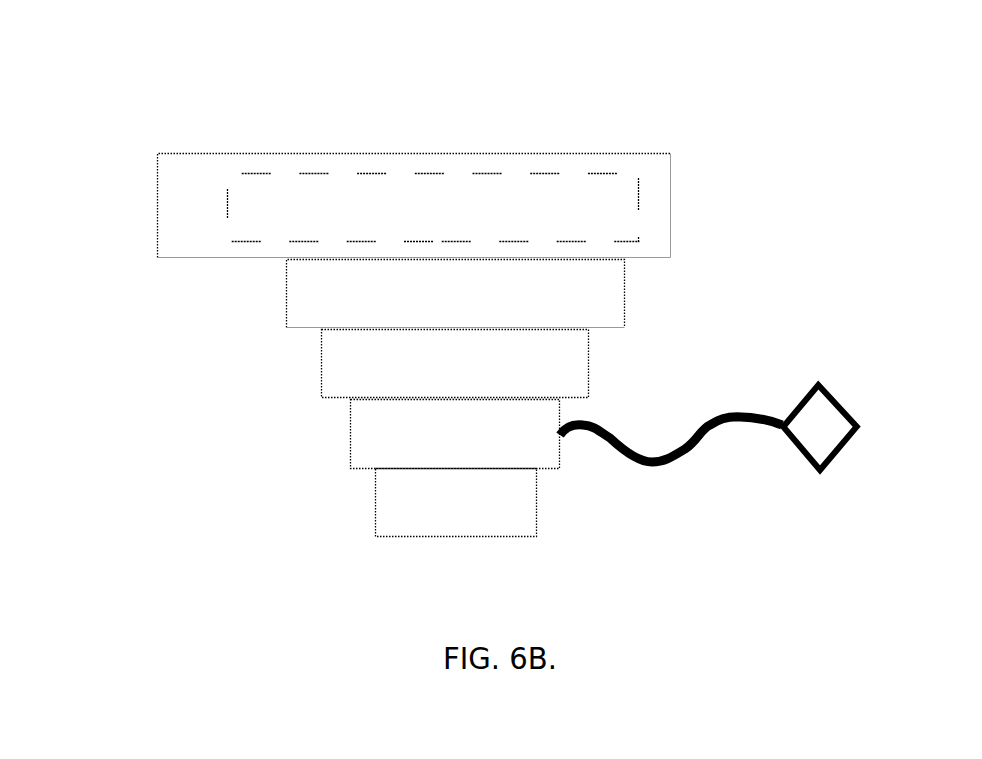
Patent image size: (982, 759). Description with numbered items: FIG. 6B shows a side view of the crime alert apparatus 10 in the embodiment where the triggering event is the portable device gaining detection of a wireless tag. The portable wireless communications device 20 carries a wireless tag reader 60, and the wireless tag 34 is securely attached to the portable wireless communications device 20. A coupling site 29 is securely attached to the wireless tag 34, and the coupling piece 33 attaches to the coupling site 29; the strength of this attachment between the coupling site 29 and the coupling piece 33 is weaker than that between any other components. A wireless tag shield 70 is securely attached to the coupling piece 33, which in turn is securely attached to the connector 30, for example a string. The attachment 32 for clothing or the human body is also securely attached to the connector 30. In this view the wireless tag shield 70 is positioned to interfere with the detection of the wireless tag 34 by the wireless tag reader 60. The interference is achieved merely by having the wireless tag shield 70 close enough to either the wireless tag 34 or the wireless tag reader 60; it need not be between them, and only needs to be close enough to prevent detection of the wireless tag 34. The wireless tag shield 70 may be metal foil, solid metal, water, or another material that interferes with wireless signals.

The crime alert apparatus 10 is at (622, 112).
The portable wireless communications device 20 is at (157, 257).
The wireless tag reader 60 is at (257, 206).
The wireless tag 34 is at (308, 297).
The coupling site 29 is at (343, 368).
The coupling piece 33 is at (380, 432).
The wireless tag shield 70 is at (445, 510).
The connector 30 is at (735, 422).
The attachment 32 is at (812, 417).